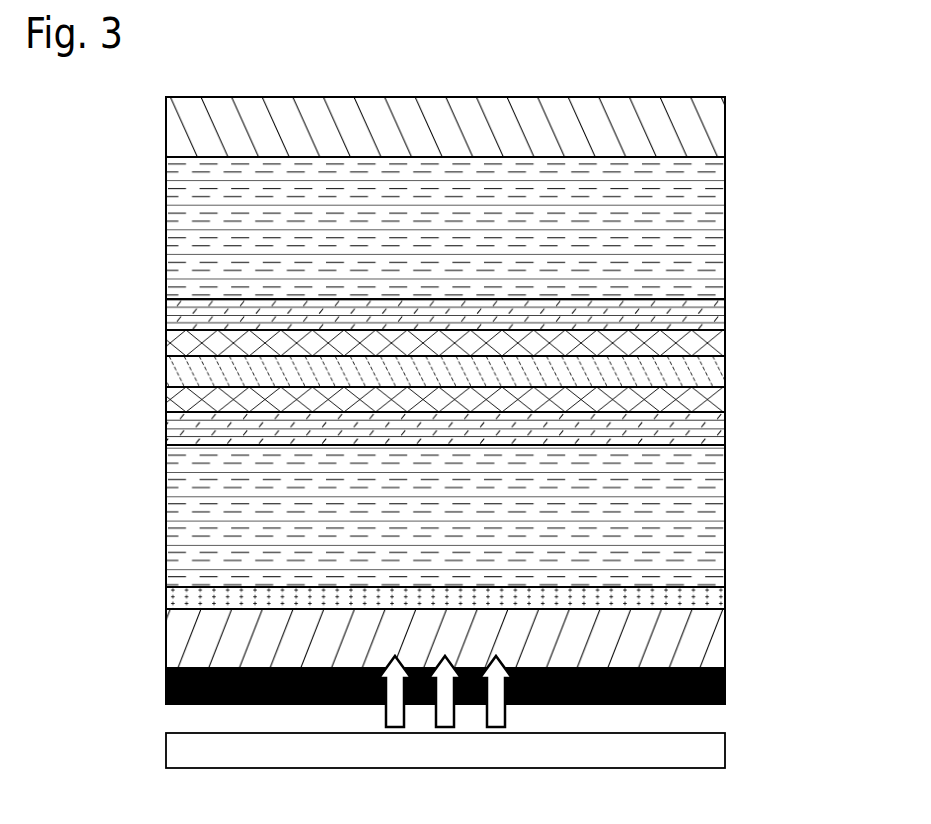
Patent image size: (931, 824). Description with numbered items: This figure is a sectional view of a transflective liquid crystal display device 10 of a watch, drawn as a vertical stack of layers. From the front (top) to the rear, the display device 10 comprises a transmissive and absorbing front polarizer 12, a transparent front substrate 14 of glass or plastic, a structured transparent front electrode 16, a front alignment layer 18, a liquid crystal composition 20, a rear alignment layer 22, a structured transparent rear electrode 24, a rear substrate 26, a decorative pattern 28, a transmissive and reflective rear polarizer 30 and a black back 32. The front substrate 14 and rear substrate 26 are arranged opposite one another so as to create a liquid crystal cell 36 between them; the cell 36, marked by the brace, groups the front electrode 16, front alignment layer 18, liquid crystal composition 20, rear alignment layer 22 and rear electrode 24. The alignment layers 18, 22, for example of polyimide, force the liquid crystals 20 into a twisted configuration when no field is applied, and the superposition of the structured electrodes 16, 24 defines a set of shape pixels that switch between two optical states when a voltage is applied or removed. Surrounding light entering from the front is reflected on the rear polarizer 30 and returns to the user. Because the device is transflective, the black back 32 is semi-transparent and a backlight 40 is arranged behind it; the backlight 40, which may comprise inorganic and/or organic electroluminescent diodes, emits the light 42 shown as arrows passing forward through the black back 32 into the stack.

The liquid crystal display device 10 is at (800, 72).
The front polarizer 12 is at (708, 128).
The front substrate 14 is at (708, 237).
The front electrode 16 is at (710, 312).
The front alignment layer 18 is at (715, 350).
The liquid crystal composition 20 is at (710, 377).
The rear alignment layer 22 is at (703, 400).
The rear electrode 24 is at (718, 428).
The rear substrate 26 is at (718, 487).
The decorative pattern 28 is at (712, 598).
The rear polarizer 30 is at (703, 640).
The black back 32 is at (727, 685).
The liquid crystal cell 36 is at (447, 377).
The backlight 40 is at (703, 756).
The light 42 is at (500, 713).